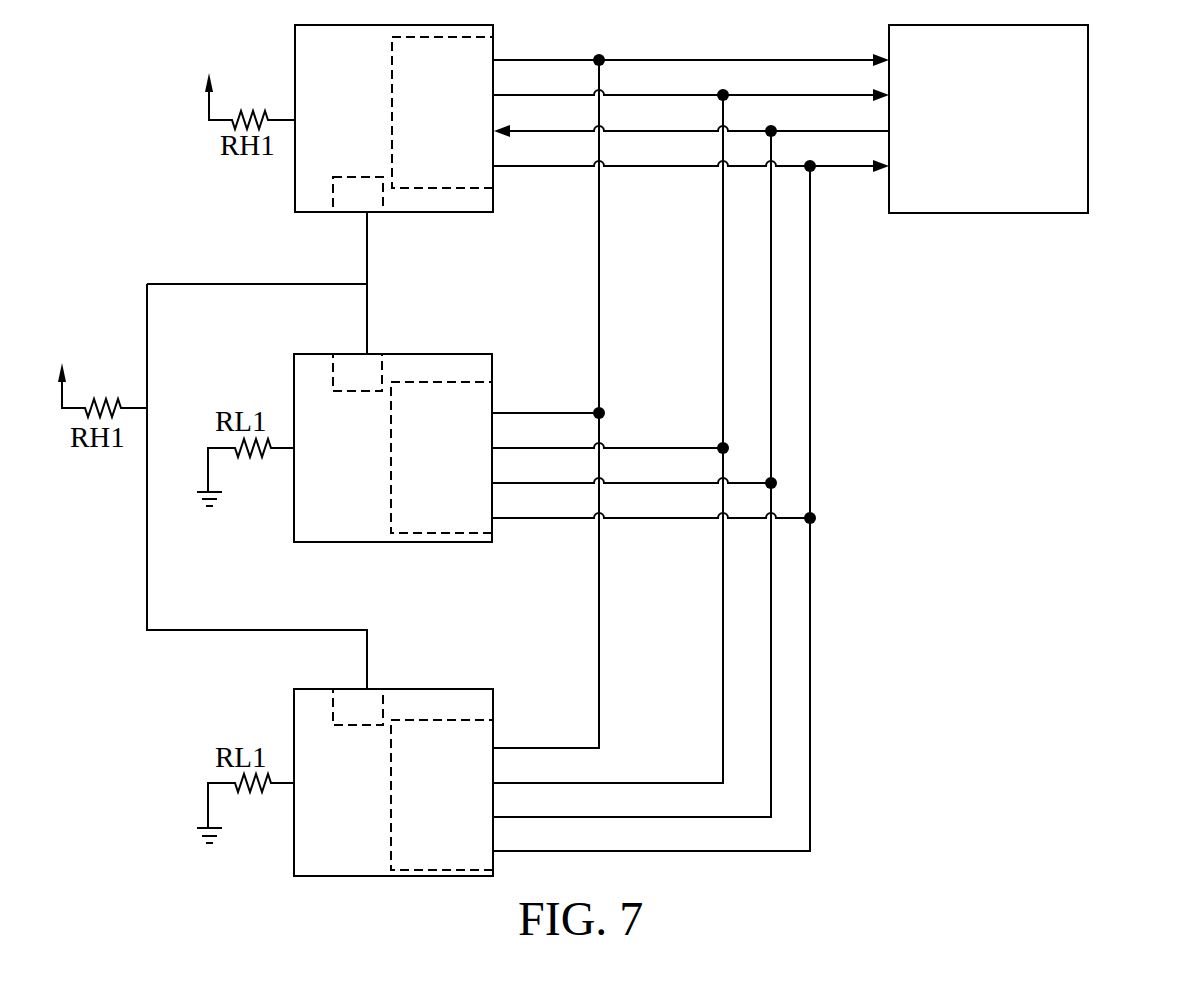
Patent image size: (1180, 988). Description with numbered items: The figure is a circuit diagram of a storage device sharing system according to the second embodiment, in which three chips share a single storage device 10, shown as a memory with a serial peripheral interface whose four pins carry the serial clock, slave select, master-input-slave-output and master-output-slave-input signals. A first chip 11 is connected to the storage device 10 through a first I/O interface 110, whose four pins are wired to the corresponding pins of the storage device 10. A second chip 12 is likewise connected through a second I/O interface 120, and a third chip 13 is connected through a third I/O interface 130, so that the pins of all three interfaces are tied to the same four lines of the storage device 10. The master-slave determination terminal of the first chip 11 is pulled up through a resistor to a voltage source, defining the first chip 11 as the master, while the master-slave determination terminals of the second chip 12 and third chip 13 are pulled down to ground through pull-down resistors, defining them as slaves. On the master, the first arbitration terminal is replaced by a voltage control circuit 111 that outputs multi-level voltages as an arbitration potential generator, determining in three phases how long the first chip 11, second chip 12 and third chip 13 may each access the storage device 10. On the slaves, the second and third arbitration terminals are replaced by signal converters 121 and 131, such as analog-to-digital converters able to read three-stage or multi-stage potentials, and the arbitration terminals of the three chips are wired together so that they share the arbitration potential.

The storage device 10 is at (1088, 118).
The first chip 11 is at (363, 138).
The second chip 12 is at (364, 442).
The third chip 13 is at (364, 779).
The first input/output interface 110 is at (447, 189).
The second input/output interface 120 is at (447, 534).
The third input/output interface 130 is at (447, 871).
The voltage control circuit 111 is at (333, 192).
The signal converter 121 is at (333, 372).
The signal converter 131 is at (333, 708).